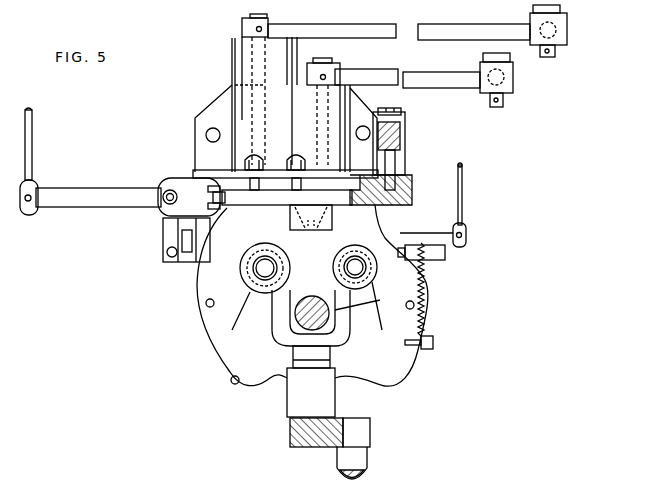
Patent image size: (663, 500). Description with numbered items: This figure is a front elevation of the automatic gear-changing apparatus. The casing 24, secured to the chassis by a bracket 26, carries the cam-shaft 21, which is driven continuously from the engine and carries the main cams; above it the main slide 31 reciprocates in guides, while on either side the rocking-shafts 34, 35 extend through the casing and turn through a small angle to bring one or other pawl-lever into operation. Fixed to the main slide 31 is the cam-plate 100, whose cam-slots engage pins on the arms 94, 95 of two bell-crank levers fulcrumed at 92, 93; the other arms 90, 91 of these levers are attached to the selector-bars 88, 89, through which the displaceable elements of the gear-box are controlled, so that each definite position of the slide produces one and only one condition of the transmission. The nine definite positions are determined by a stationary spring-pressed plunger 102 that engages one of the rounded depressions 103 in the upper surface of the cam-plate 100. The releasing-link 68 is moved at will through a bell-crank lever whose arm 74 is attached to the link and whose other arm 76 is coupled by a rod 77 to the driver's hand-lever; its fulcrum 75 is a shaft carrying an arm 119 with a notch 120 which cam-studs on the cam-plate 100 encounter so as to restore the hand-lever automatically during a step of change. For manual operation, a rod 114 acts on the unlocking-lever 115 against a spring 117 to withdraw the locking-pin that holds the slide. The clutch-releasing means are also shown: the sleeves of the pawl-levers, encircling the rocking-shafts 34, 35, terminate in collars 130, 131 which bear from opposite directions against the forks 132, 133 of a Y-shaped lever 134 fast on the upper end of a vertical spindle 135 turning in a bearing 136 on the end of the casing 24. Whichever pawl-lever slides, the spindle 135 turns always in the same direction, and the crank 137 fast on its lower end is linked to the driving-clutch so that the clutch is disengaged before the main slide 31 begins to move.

The cam-shaft 21 is at (300, 340).
The casing 24 is at (240, 383).
The bracket 26 is at (222, 98).
The main slide 31 is at (287, 218).
The rocking-shaft 34 is at (360, 268).
The rocking-shaft 35 is at (252, 270).
The releasing-link 68 is at (446, 252).
The arm of bell-crank lever 74 is at (165, 232).
The fulcrum shaft 75 is at (170, 196).
The arm of bell-crank lever 76 is at (105, 190).
The rod 77 is at (33, 152).
The selector-bar 88 is at (562, 40).
The selector-bar 89 is at (465, 88).
The arm of bell-crank lever 90 is at (510, 40).
The arm of bell-crank lever 91 is at (400, 88).
The fulcrum 92 is at (250, 47).
The fulcrum 93 is at (318, 105).
The arm of bell-crank lever 94 is at (232, 130).
The arm of bell-crank lever 95 is at (240, 165).
The cam-plate 100 is at (412, 198).
The spring-pressed plunger 102 is at (400, 160).
The rounded depressions 103 is at (380, 205).
The rod 114 is at (462, 180).
The unlocking-lever 115 is at (466, 238).
The spring 117 is at (425, 330).
The arm 119 is at (225, 183).
The notch 120 is at (208, 196).
The collar 130 is at (375, 265).
The collar 131 is at (268, 285).
The fork 132 is at (370, 320).
The fork 133 is at (257, 302).
The Y-shaped lever 134 is at (403, 373).
The vertical spindle 135 is at (289, 432).
The bearing 136 is at (287, 388).
The crank 137 is at (358, 462).